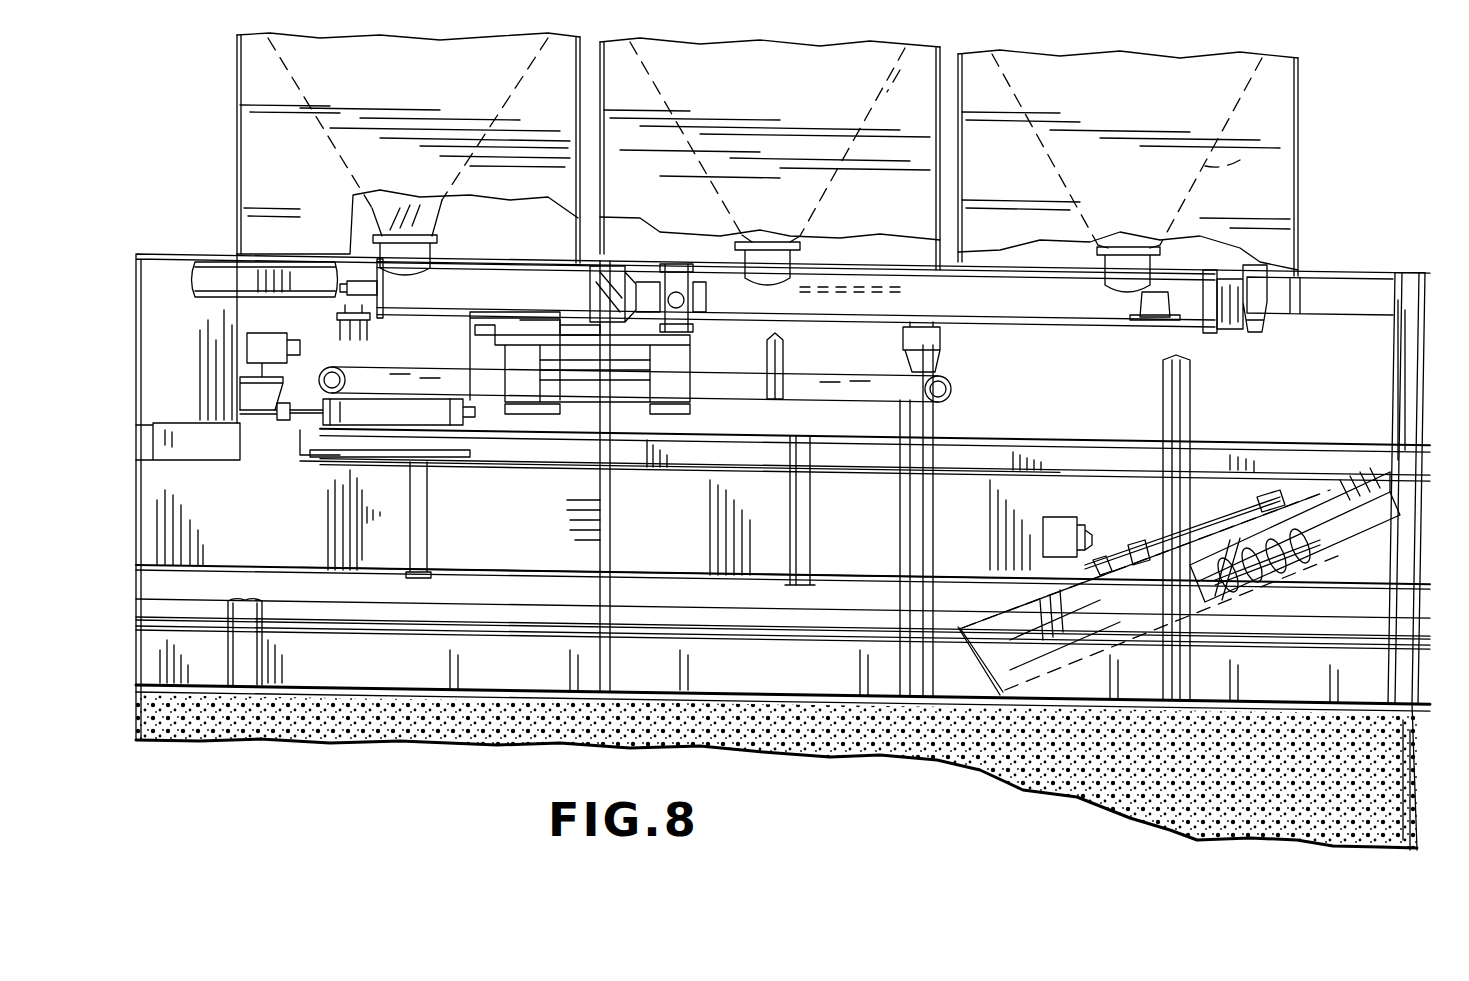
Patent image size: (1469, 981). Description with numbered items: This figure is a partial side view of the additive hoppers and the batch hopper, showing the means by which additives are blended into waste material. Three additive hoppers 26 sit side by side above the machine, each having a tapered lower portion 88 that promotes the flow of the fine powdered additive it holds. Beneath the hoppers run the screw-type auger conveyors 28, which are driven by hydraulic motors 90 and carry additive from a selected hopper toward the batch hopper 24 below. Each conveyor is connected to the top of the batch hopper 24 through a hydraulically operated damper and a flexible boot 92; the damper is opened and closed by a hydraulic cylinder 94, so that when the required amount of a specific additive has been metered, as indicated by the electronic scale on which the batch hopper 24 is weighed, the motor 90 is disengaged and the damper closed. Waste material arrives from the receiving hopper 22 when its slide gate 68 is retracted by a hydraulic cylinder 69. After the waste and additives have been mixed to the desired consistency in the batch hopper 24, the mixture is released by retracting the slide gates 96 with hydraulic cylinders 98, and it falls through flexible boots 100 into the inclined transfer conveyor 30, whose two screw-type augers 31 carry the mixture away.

The receiving hopper 22 is at (172, 252).
The batch hopper 24 is at (330, 572).
The additive hoppers 26 is at (424, 100).
The screw-type auger conveyors 28 is at (848, 318).
The transfer conveyor 30 is at (1322, 580).
The screw-type auger conveyors (screws) of transfer conveyor 31 is at (1255, 580).
The slide gate 68 is at (258, 418).
The hydraulic cylinder 69 is at (300, 430).
The tapered lower portion 88 is at (270, 126).
The hydraulic motors 90 is at (690, 262).
The flexible boot 92 is at (516, 405).
The hydraulic cylinder 94 is at (520, 300).
The slide gates 96 is at (1085, 560).
The hydraulic cylinders 98 is at (1137, 540).
The flexible boots 100 is at (958, 640).